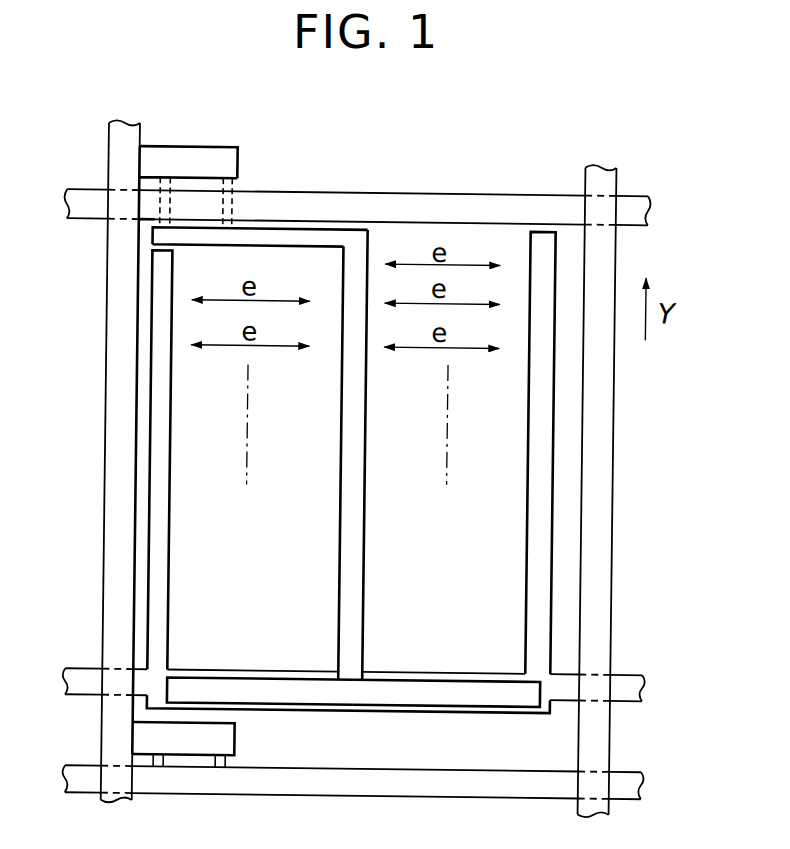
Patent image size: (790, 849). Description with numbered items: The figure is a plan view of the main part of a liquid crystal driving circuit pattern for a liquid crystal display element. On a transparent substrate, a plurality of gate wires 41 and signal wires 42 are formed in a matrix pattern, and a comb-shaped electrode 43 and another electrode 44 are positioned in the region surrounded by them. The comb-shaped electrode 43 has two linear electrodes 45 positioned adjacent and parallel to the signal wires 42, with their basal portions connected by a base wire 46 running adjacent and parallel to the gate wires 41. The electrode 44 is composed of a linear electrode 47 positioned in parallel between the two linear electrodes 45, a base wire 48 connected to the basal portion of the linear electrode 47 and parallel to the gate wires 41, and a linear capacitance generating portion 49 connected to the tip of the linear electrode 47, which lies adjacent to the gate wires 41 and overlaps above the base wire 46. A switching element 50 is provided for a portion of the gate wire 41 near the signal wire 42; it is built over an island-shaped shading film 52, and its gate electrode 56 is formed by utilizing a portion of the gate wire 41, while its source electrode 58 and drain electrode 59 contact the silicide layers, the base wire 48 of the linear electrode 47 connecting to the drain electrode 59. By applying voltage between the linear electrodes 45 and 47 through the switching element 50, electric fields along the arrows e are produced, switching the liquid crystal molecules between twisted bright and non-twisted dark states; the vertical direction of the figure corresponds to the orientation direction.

The gate wire 41 is at (410, 205).
The signal wire 42 is at (106, 525).
The comb-shaped electrode 43 is at (557, 410).
The electrode 44 is at (373, 529).
The linear electrode 45 is at (165, 595).
The base wire 46 is at (310, 673).
The linear electrode 47 is at (348, 545).
The base wire 48 is at (300, 236).
The linear capacitance generating portion 49 is at (403, 682).
The switching element 50 is at (249, 159).
The shading film 52 is at (154, 225).
The gate electrode 56 is at (209, 212).
The source electrode 58 is at (214, 154).
The drain electrode 59 is at (210, 237).